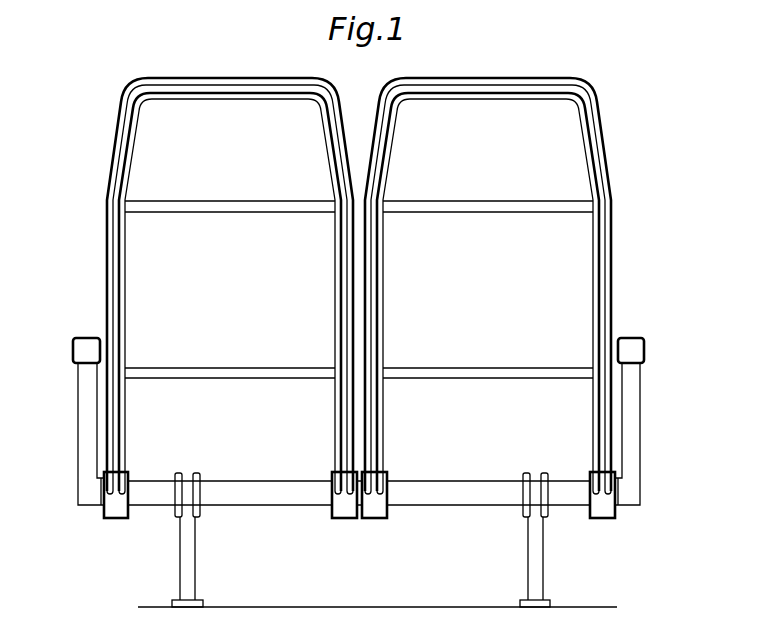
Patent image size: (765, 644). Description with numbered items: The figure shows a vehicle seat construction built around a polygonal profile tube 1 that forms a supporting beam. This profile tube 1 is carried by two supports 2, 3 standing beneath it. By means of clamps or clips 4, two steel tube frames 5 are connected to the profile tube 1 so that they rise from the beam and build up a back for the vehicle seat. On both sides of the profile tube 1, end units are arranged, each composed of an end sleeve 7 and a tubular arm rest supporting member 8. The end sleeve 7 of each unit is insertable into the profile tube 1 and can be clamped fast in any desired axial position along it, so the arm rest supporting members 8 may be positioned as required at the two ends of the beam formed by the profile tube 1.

The profile tube 1 is at (452, 494).
The support 2 is at (187, 560).
The support 3 is at (537, 577).
The clamp 4 is at (588, 530).
The steel tube frame 5 is at (408, 292).
The end sleeve 7 is at (102, 502).
The tubular arm rest supporting member 8 is at (665, 398).